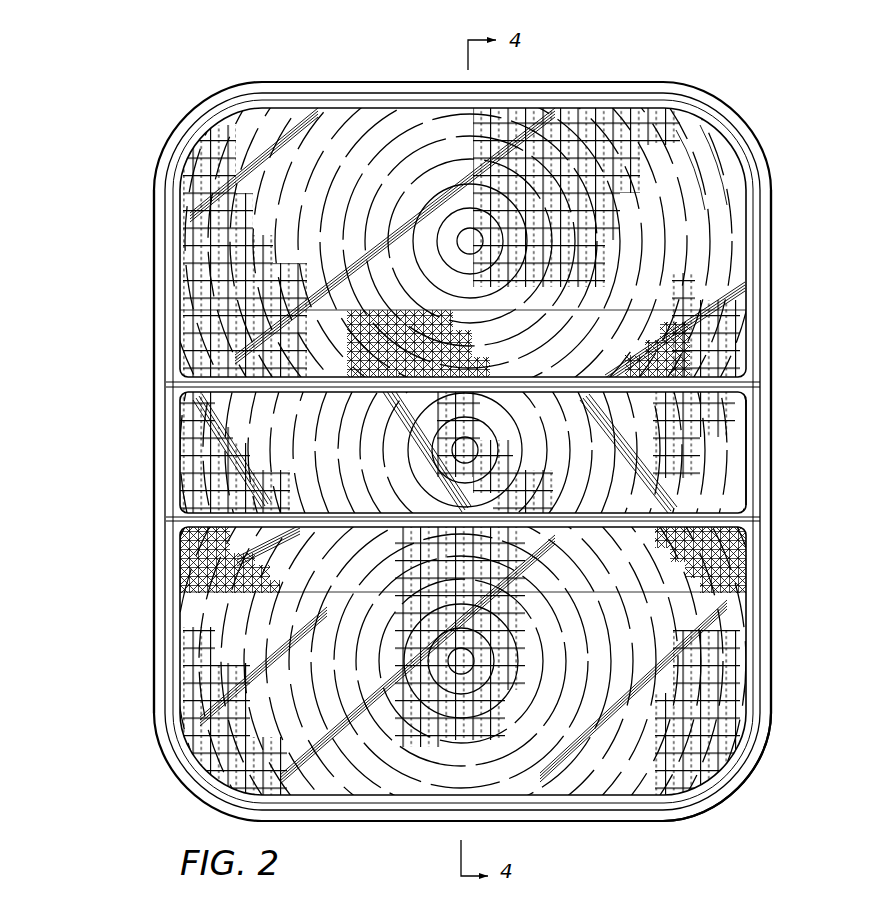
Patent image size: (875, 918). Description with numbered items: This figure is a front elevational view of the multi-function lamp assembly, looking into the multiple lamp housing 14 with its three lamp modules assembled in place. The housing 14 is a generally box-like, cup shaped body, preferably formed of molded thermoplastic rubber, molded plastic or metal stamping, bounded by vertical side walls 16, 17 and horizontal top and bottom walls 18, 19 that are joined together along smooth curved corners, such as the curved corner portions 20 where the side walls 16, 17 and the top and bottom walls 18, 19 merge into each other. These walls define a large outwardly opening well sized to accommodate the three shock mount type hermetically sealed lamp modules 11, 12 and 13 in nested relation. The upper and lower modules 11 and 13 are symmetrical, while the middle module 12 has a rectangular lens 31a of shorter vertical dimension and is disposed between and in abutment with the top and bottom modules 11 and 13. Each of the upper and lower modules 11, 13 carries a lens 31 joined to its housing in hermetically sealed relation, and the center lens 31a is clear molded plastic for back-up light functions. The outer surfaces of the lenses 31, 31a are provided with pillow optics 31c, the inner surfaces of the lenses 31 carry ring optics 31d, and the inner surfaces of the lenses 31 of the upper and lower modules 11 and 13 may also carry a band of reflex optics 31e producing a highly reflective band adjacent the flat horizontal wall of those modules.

The upper lamp module 11 is at (194, 257).
The middle lamp module 12 is at (185, 470).
The lower lamp module 13 is at (198, 684).
The multiple lamp housing 14 is at (335, 83).
The vertical side wall 16 is at (150, 380).
The vertical side wall 17 is at (774, 482).
The top wall 18 is at (552, 81).
The bottom wall 19 is at (406, 820).
The curved corner portion 20 is at (726, 785).
The lens 31 is at (745, 268).
The center module lens 31a is at (748, 443).
The pillow optics 31c is at (655, 136).
The ring optics 31d is at (690, 217).
The reflex optics band 31e is at (742, 550).